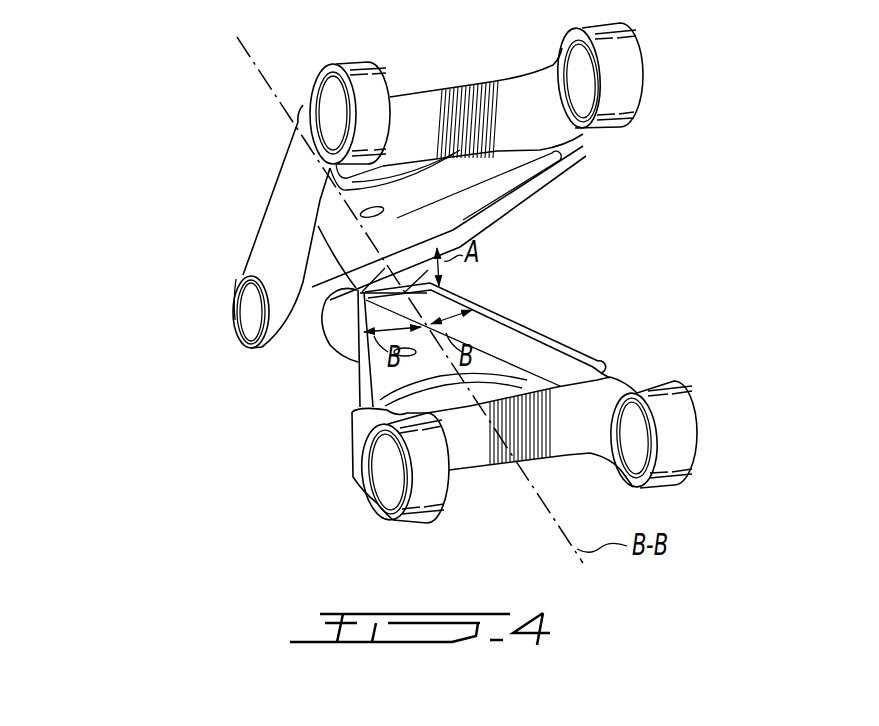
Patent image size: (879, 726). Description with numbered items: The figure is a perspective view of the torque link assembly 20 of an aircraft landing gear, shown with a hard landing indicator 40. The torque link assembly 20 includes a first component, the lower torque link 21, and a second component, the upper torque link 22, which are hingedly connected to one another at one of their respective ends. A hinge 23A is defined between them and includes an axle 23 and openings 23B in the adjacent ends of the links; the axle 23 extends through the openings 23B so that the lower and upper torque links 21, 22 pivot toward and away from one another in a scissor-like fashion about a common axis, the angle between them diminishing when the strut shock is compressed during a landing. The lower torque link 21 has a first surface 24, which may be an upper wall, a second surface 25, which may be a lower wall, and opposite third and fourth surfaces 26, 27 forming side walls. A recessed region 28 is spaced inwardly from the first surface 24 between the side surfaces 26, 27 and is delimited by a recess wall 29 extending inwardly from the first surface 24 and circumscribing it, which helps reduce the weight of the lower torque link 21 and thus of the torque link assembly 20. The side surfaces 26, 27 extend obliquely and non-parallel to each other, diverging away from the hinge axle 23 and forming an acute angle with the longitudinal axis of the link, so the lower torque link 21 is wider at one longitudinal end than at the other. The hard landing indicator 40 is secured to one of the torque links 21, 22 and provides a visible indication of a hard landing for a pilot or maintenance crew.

The torque link assembly 20 is at (182, 132).
The lower torque link 21 is at (682, 422).
The upper torque link 22 is at (615, 66).
The axle 23 is at (257, 313).
The hinge 23A is at (210, 294).
The openings 23B is at (236, 277).
The first surface 24 is at (617, 373).
The second surface 25 is at (582, 144).
The third surface 26 is at (353, 394).
The fourth surface 27 is at (566, 324).
The recessed region 28 is at (480, 306).
The recess wall 29 is at (513, 340).
The hard landing indicator 40 is at (338, 318).